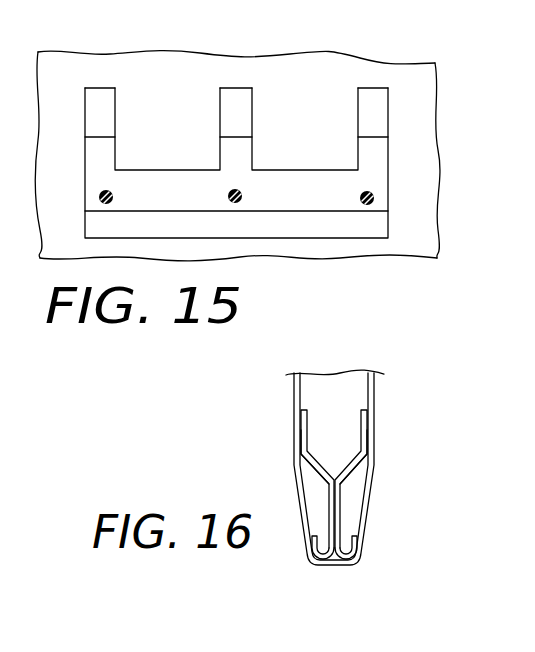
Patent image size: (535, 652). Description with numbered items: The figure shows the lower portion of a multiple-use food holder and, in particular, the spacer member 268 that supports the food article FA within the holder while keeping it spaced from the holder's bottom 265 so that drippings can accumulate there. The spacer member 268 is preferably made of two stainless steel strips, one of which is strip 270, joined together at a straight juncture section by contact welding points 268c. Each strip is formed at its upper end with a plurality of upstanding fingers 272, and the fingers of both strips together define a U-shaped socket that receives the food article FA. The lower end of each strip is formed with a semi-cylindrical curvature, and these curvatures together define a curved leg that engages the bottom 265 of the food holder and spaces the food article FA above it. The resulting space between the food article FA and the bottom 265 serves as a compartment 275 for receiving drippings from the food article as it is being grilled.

In FIG. 15, the food article FA is at (340, 65).
In FIG. 15, the upstanding fingers 272 is at (250, 105).
In FIG. 16, the upstanding fingers 272 is at (278, 457).
In FIG. 15, the contact welding points 268c is at (243, 197).
In FIG. 16, the stainless steel strip 270 is at (294, 440).
In FIG. 16, the spacer member 268 is at (374, 475).
In FIG. 16, the compartment 275 is at (394, 469).
In FIG. 16, the bottom 265 is at (334, 568).